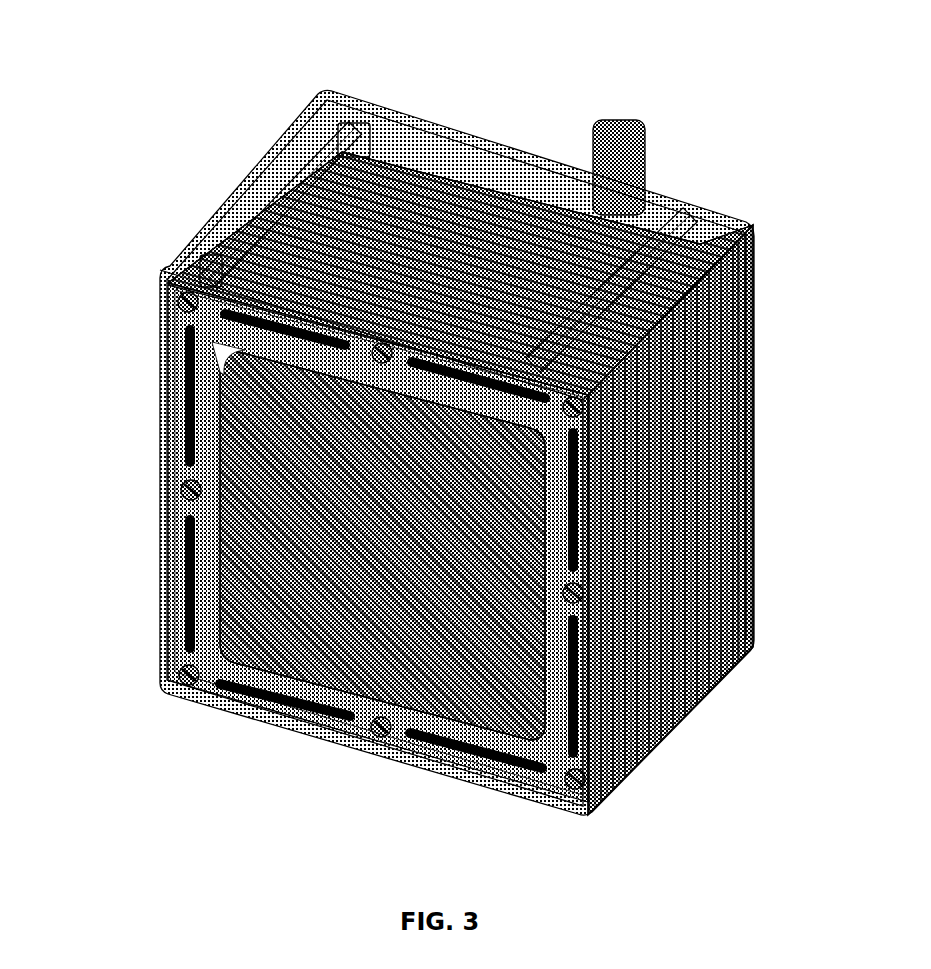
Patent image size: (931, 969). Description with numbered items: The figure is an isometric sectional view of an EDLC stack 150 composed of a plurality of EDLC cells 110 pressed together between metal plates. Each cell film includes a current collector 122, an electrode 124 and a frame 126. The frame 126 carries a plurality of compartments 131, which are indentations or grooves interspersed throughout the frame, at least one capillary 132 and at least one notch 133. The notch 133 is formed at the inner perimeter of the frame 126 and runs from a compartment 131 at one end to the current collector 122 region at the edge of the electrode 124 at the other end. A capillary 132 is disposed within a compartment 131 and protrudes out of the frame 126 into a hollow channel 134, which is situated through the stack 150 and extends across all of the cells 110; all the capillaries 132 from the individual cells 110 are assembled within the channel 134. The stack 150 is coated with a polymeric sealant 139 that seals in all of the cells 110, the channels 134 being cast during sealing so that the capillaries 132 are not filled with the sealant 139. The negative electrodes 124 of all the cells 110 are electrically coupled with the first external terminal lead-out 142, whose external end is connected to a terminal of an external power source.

The EDLC stack 150 is at (431, 412).
The EDLC cells 110 is at (667, 556).
The current collector 122 is at (216, 350).
The electrode 124 is at (250, 477).
The frame 126 is at (181, 607).
The compartments 131 is at (180, 280).
The capillary 132 is at (258, 247).
The notch 133 is at (190, 315).
The hollow channel 134 is at (477, 452).
The polymeric sealant 139 is at (414, 172).
The first external terminal lead-out 142 is at (620, 126).